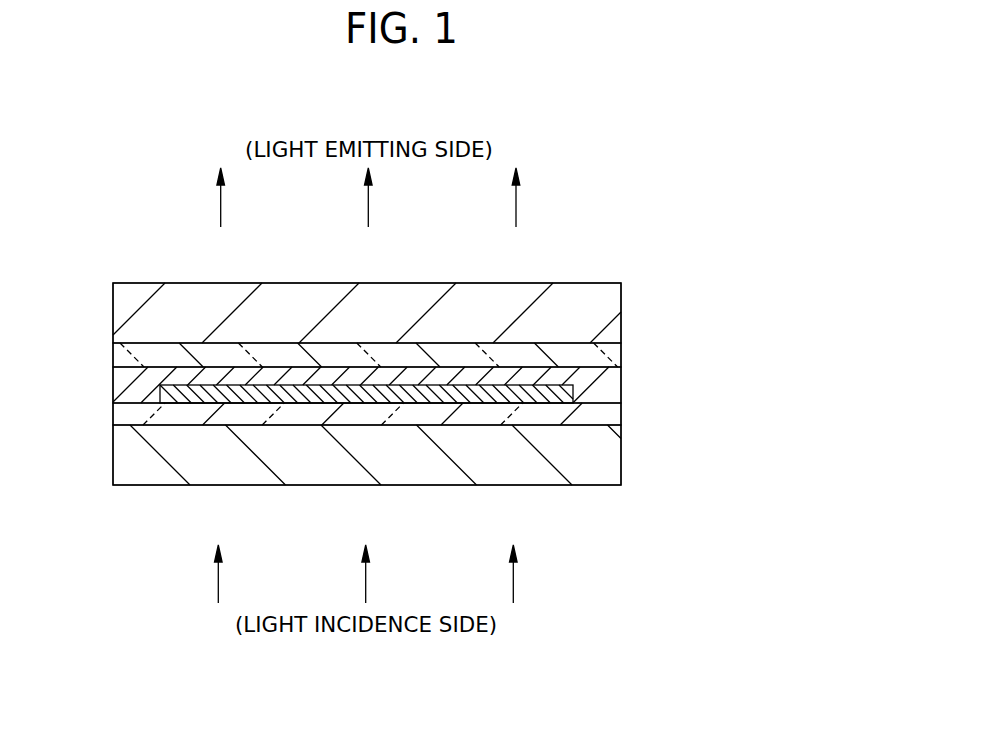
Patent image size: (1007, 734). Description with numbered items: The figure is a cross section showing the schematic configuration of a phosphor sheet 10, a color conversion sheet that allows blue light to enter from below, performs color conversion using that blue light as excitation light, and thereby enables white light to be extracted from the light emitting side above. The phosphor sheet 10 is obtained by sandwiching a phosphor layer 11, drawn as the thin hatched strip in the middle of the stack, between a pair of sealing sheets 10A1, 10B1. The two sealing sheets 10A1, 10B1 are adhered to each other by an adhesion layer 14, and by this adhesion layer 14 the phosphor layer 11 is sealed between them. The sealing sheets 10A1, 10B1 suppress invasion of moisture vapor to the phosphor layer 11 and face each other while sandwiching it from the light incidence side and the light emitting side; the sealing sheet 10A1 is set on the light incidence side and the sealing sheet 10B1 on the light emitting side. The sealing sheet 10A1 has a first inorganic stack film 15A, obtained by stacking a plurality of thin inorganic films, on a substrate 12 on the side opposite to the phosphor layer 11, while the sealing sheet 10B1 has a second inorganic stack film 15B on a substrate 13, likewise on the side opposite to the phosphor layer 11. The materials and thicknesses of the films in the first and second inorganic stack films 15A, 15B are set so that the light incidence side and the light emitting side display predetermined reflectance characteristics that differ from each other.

The phosphor sheet 10 is at (651, 208).
The phosphor layer 11 is at (290, 396).
The substrate 12 is at (611, 413).
The substrate 13 is at (611, 353).
The adhesion layer 14 is at (611, 385).
The first inorganic stack film 15A is at (611, 453).
The second inorganic stack film 15B is at (611, 313).
The sealing sheet 10A1 is at (698, 400).
The sealing sheet 10B1 is at (698, 292).